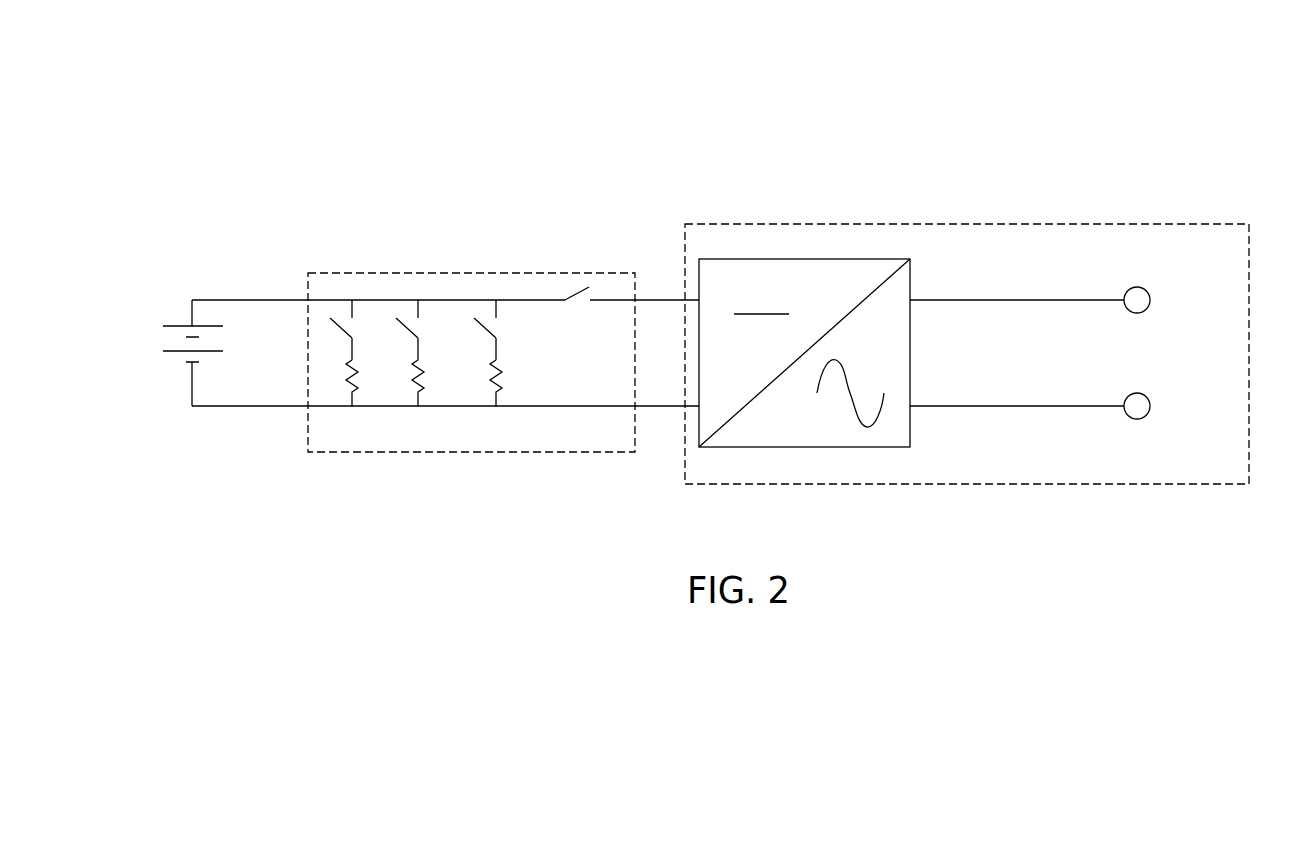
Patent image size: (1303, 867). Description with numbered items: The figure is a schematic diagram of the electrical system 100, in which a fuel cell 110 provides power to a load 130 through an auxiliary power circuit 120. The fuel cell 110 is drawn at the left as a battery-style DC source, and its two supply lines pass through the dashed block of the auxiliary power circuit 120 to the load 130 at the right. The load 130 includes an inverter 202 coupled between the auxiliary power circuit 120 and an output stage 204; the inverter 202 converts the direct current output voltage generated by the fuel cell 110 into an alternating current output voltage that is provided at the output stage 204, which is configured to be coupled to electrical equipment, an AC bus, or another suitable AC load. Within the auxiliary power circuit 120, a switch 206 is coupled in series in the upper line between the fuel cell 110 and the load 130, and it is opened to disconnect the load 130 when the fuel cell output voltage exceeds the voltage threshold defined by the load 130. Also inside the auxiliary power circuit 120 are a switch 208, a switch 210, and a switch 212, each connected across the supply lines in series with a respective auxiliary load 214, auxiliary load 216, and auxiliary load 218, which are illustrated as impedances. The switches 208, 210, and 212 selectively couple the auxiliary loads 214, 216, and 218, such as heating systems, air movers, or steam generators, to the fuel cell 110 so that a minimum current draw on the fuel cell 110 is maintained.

The electrical system 100 is at (1068, 77).
The fuel cell 110 is at (170, 334).
The auxiliary power circuit 120 is at (570, 272).
The load 130 is at (962, 224).
The inverter 202 is at (803, 259).
The output stage 204 is at (1145, 282).
The switch 206 is at (576, 302).
The switch 208 is at (338, 328).
The switch 210 is at (404, 328).
The switch 212 is at (482, 328).
The auxiliary load 214 is at (363, 385).
The auxiliary load 216 is at (429, 385).
The auxiliary load 218 is at (507, 385).